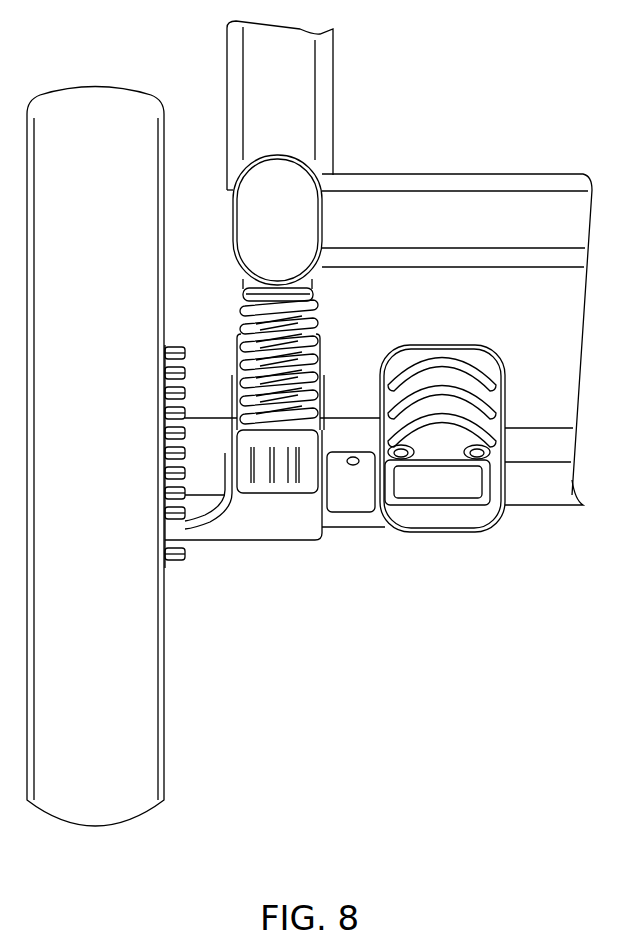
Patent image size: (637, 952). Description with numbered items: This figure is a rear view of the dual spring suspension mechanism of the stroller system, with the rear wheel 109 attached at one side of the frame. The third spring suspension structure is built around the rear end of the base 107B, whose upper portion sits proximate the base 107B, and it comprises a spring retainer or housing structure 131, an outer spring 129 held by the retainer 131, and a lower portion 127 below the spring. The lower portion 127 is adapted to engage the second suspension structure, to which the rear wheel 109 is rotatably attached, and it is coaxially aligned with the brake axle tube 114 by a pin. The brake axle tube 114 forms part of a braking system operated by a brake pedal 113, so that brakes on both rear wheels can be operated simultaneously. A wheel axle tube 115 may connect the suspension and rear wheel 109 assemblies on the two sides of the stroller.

The rear wheel 109 is at (95, 820).
The base 107B is at (291, 196).
The brake pedal 113 is at (316, 284).
The outer spring 129 is at (307, 336).
The spring retainer 131 is at (297, 372).
The lower portion 127 is at (277, 480).
The wheel axle tube 115 is at (518, 453).
The brake axle tube 114 is at (560, 493).